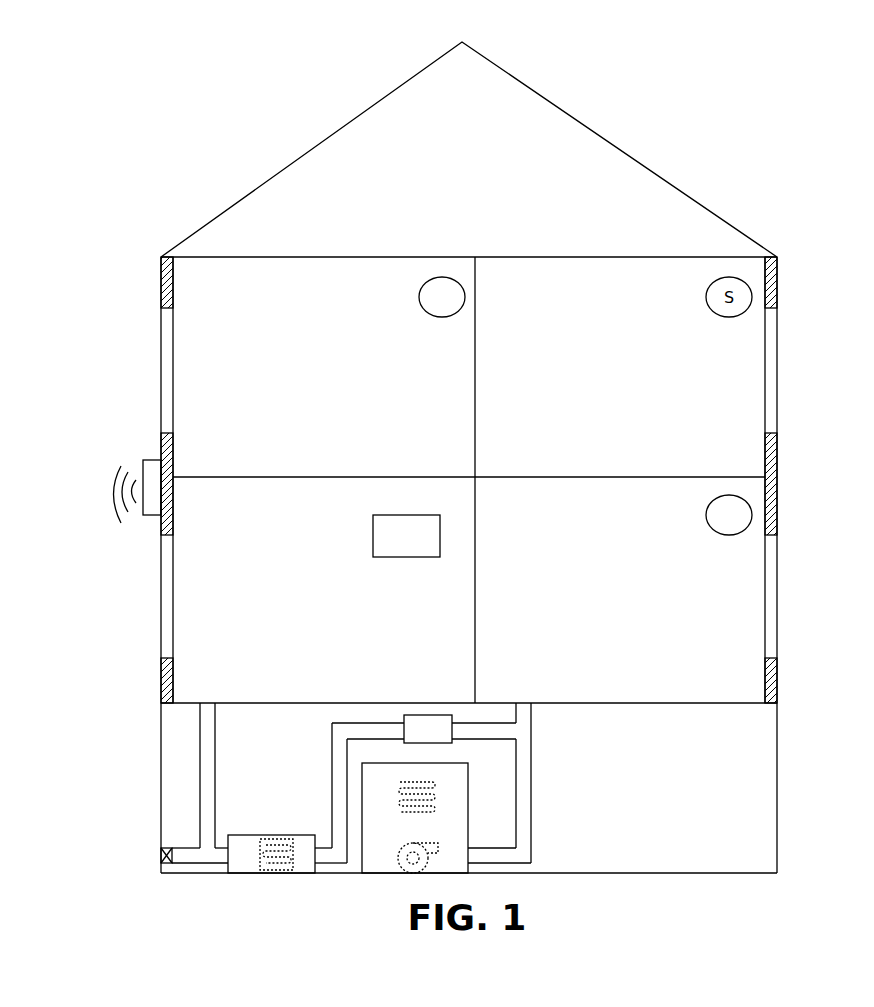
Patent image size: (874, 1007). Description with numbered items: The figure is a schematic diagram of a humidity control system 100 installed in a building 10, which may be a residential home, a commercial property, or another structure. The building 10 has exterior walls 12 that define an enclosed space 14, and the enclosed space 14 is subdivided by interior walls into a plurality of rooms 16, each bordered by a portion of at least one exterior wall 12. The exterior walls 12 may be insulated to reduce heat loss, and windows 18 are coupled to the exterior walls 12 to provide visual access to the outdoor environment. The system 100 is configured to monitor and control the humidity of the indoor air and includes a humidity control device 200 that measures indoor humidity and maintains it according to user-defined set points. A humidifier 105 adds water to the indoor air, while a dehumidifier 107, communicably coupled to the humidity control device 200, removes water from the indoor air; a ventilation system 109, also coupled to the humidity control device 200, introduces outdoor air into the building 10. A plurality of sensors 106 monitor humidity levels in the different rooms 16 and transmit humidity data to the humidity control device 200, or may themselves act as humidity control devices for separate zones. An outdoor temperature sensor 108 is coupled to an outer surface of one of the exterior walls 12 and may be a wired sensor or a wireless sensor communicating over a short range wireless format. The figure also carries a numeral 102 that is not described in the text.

The building 10 is at (148, 123).
The exterior walls 12 is at (778, 276).
The enclosed space 14 is at (743, 671).
The rooms 16 is at (722, 583).
The windows 18 is at (813, 544).
The humidity control system 100 is at (391, 834).
The air handling unit / furnace 102 is at (488, 749).
The humidifier 105 is at (452, 729).
The sensors 106 is at (432, 309).
The dehumidifier 107 is at (302, 865).
The outdoor temperature sensor 108 is at (150, 472).
The ventilation system 109 is at (165, 875).
The humidity control device 200 is at (394, 557).